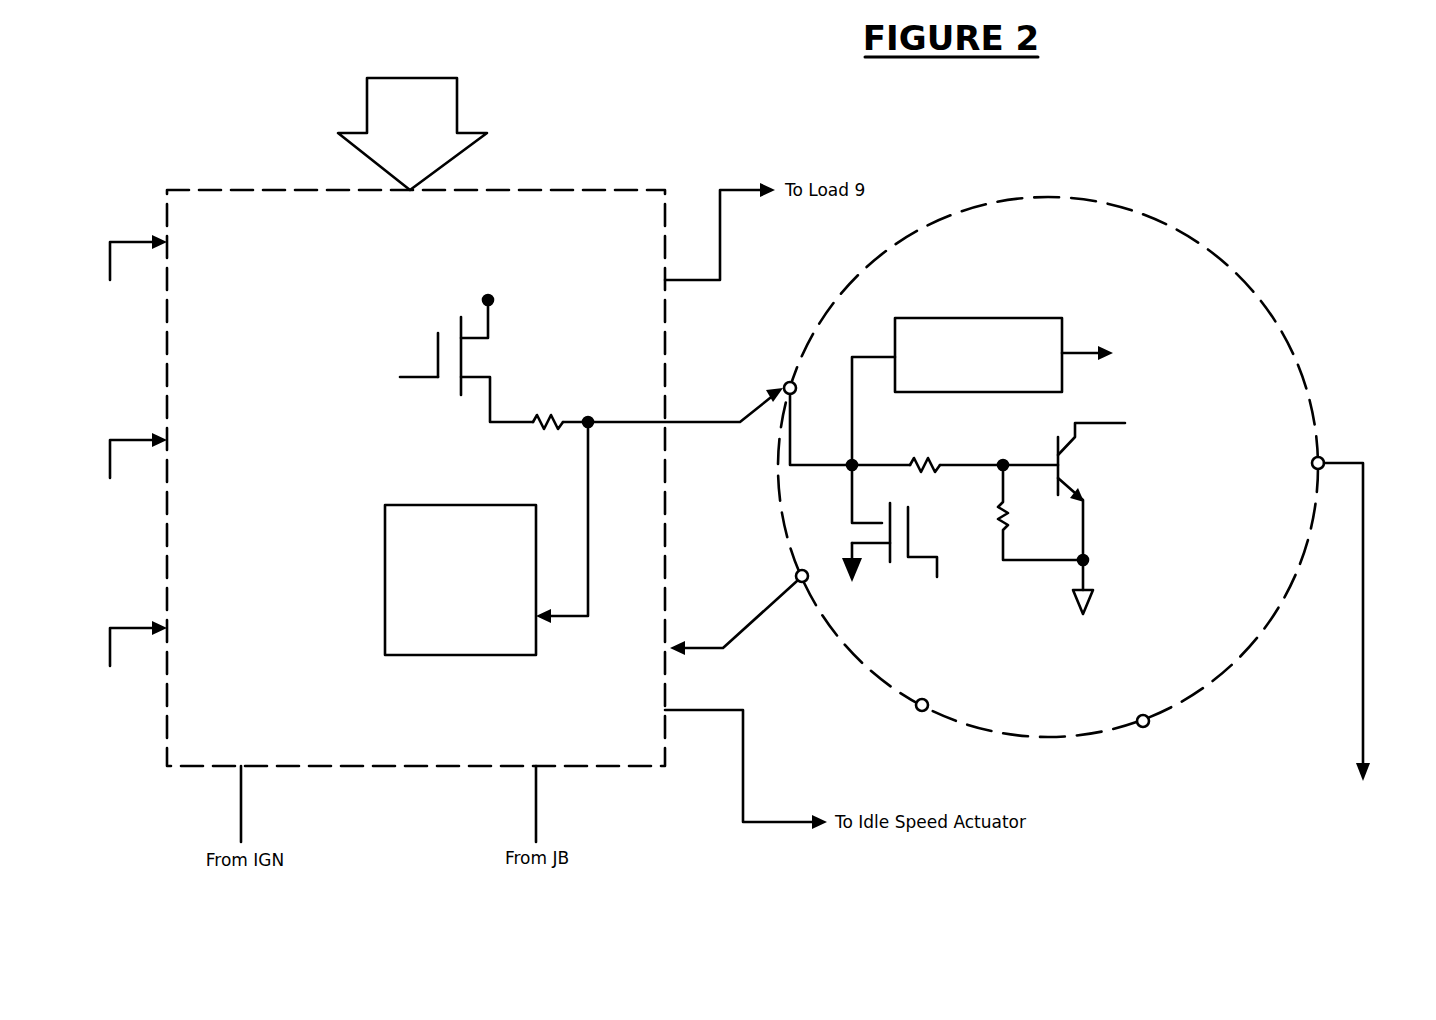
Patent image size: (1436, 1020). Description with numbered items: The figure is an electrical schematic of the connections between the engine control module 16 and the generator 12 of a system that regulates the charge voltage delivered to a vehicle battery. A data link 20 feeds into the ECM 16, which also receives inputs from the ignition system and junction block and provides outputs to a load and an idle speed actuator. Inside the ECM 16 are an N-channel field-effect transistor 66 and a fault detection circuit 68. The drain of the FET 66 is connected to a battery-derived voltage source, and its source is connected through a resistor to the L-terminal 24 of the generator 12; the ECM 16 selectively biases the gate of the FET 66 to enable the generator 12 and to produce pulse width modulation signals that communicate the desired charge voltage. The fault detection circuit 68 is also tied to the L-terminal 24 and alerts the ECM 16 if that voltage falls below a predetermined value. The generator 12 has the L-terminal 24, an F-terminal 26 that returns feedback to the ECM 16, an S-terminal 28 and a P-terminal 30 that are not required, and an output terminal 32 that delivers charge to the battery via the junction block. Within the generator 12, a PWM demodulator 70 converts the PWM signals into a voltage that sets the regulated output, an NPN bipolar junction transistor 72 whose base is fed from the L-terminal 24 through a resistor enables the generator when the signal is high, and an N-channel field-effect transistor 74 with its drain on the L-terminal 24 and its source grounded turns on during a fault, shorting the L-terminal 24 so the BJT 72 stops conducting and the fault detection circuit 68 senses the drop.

The generator 12 is at (1157, 218).
The engine control module 16 is at (570, 188).
The data link 20 is at (457, 93).
The L-terminal 24 is at (791, 382).
The F-terminal 26 is at (803, 583).
The S-terminal 28 is at (927, 710).
The P-terminal 30 is at (1146, 727).
The output terminal 32 is at (1321, 451).
The N-channel field-effect transistor 66 is at (522, 352).
The fault detection circuit 68 is at (427, 655).
The PWM demodulator 70 is at (1050, 317).
The NPN bipolar junction transistor 72 is at (1086, 466).
The N-channel field-effect transistor 74 is at (845, 530).